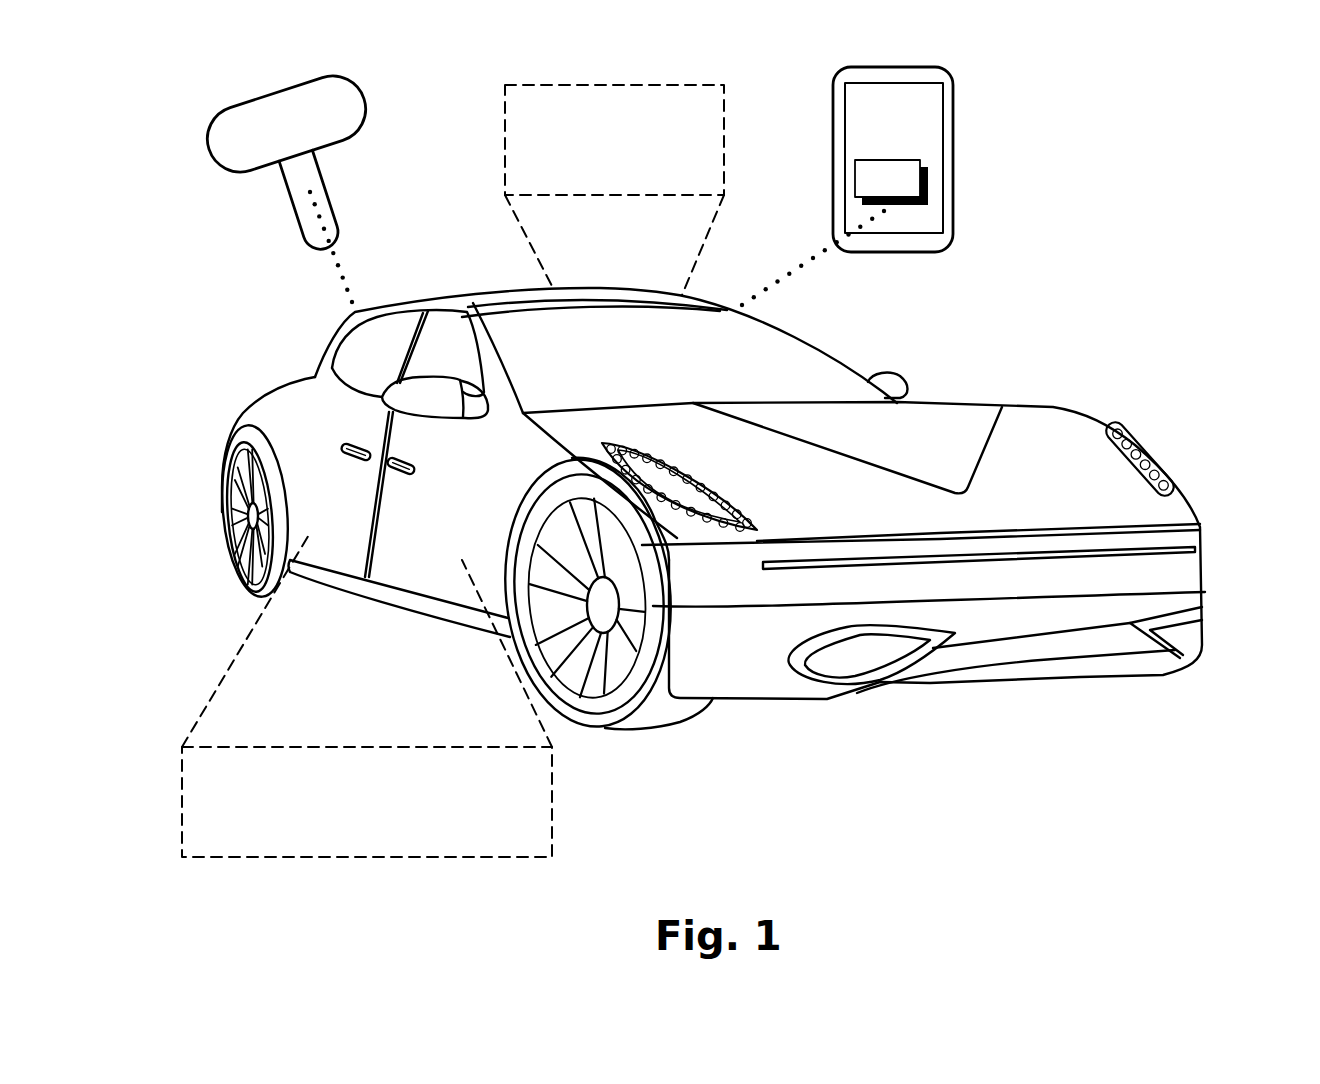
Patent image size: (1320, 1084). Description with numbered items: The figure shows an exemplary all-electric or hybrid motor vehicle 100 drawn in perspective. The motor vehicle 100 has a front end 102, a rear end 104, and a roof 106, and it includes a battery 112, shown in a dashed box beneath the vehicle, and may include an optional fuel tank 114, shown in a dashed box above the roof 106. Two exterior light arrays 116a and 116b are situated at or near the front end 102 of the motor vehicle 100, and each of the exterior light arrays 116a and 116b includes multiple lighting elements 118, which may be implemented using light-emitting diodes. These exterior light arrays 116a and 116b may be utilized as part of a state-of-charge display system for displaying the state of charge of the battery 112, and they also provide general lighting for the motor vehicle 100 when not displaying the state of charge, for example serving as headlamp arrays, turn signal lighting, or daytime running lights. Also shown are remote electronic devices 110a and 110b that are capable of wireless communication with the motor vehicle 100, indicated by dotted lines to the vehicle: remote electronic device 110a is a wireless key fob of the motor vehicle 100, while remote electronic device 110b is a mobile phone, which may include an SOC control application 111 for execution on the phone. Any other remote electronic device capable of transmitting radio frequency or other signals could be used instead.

The motor vehicle 100 is at (935, 337).
The front end 102 is at (1073, 620).
The rear end 104 is at (263, 383).
The roof 106 is at (578, 297).
The remote electronic device 110a is at (242, 102).
The remote electronic device 110b is at (955, 187).
The SOC control application 111 is at (907, 189).
The battery 112 is at (180, 813).
The fuel tank 114 is at (505, 135).
The exterior light array 116a is at (735, 487).
The exterior light array 116b is at (1163, 450).
The lighting elements 118 is at (633, 447).